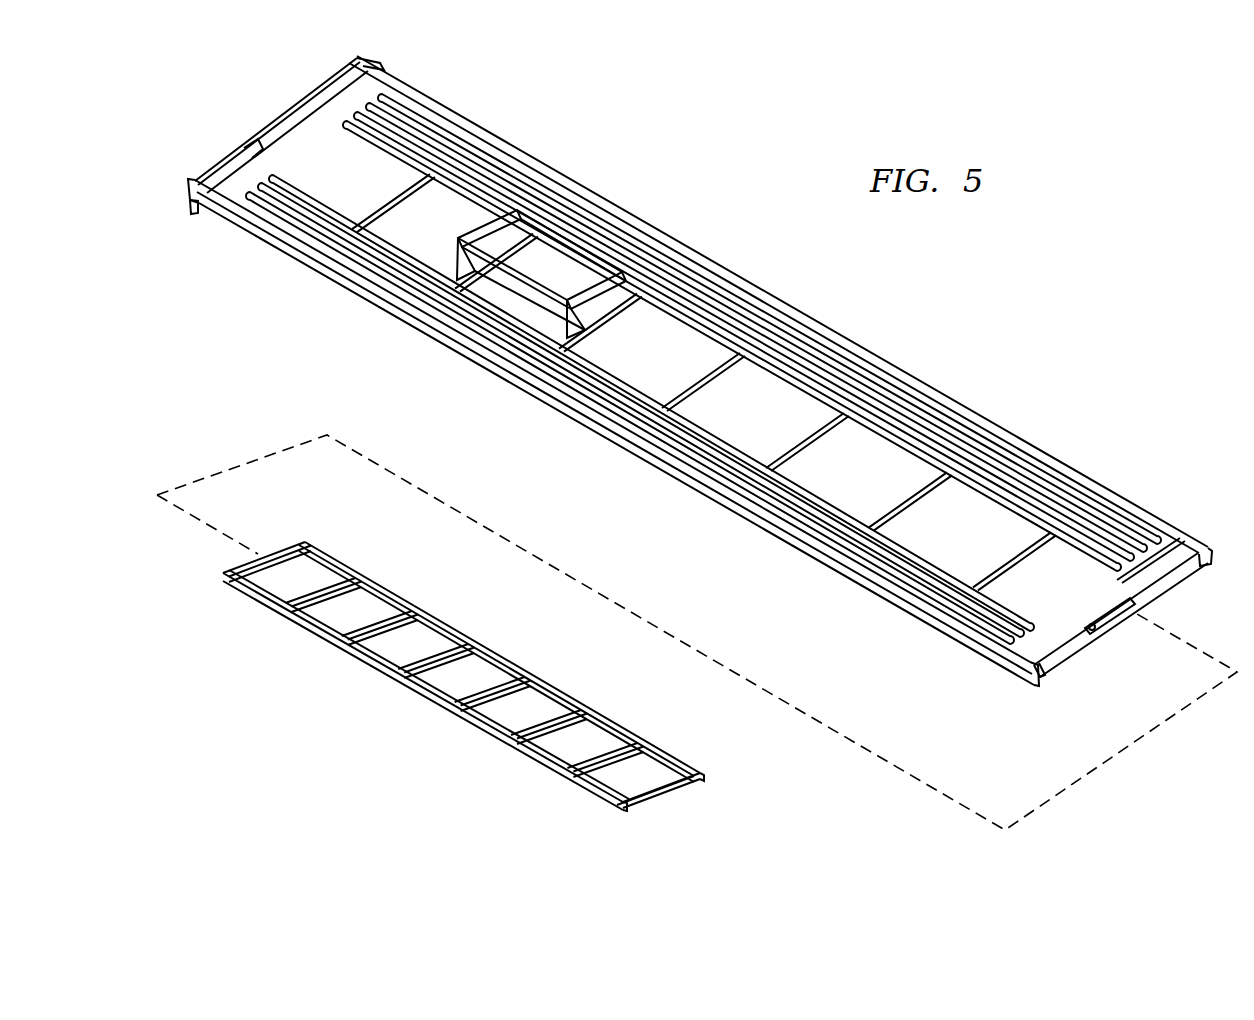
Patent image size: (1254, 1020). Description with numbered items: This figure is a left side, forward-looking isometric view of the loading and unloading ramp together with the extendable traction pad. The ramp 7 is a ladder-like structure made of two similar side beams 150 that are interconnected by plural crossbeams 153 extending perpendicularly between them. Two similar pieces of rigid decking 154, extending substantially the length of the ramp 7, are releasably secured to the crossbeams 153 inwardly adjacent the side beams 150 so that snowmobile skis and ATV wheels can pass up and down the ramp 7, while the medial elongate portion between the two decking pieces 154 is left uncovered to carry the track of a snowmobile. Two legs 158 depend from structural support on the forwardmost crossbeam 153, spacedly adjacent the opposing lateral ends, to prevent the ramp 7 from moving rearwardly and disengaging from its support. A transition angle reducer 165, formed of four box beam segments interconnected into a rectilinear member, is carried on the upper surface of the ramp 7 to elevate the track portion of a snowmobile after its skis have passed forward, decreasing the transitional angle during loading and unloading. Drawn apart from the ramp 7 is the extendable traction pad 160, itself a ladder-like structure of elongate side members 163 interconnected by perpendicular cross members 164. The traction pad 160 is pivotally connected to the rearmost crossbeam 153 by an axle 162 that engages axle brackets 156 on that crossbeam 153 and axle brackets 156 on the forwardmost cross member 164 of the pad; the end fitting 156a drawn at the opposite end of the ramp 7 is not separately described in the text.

The ramp 7 is at (915, 358).
The side beams 150 is at (263, 230).
The crossbeams 153 is at (383, 212).
The rigid decking 154 is at (577, 387).
The axle brackets 156 is at (1140, 605).
The end cap 156a is at (262, 135).
The legs 158 is at (188, 205).
The extendable traction pad 160 is at (442, 670).
The axle 162 is at (1112, 610).
The elongate side members 163 is at (387, 593).
The cross members 164 is at (273, 549).
The transition angle reducer 165 is at (612, 296).